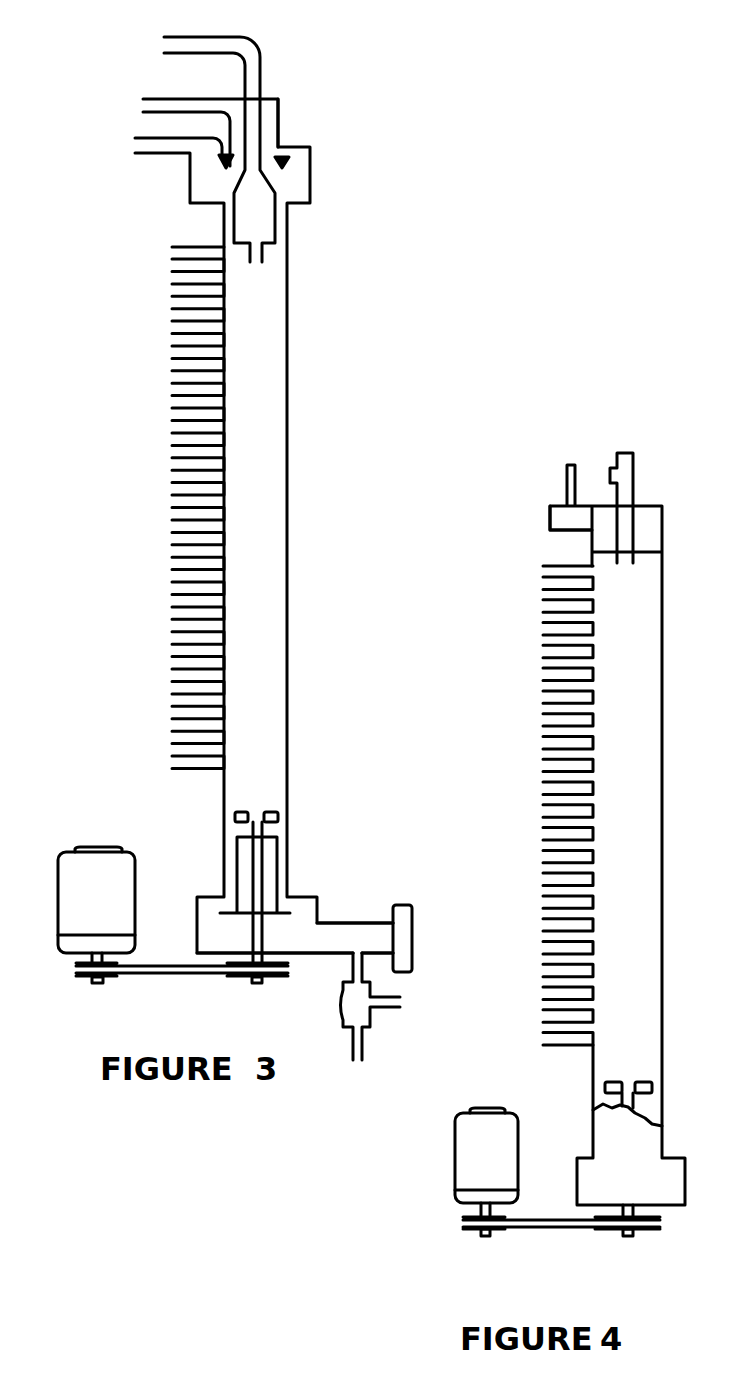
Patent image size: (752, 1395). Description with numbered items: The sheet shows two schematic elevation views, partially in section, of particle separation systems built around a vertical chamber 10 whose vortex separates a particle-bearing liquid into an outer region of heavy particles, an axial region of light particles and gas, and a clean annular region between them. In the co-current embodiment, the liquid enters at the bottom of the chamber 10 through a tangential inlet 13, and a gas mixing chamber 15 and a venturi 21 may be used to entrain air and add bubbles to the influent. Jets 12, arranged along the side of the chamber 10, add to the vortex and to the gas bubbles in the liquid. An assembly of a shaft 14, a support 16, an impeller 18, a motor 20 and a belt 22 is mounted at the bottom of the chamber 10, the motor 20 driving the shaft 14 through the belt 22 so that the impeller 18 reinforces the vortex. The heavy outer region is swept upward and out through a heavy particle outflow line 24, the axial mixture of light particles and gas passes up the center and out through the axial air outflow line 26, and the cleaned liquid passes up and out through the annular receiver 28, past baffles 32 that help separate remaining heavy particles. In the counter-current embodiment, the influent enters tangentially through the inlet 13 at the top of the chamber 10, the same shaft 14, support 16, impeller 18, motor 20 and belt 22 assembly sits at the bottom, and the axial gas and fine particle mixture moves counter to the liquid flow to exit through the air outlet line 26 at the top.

In FIG. 3, the chamber 10 is at (288, 460).
In FIG. 4, the chamber 10 is at (663, 648).
In FIG. 3, the jets 12 is at (185, 247).
In FIG. 4, the jets 12 is at (558, 566).
In FIG. 3, the inlet 13 is at (360, 923).
In FIG. 4, the inlet 13 is at (568, 530).
In FIG. 4, the shaft 14 is at (635, 1237).
In FIG. 3, the gas mixing chamber 15 is at (403, 905).
In FIG. 3, the support 16 is at (278, 843).
In FIG. 3, the impeller 18 is at (272, 812).
In FIG. 4, the impeller 18 is at (648, 1082).
In FIG. 3, the motor 20 is at (58, 858).
In FIG. 4, the motor 20 is at (455, 1158).
In FIG. 3, the venturi 21 is at (372, 1010).
In FIG. 3, the belt 22 is at (160, 975).
In FIG. 4, the belt 22 is at (548, 1230).
In FIG. 3, the heavy particle outflow line 24 is at (150, 155).
In FIG. 3, the air outflow line 26 is at (238, 37).
In FIG. 4, the air outflow line 26 is at (634, 477).
In FIG. 3, the annular receiver 28 is at (280, 110).
In FIG. 3, the baffles 32 is at (165, 98).